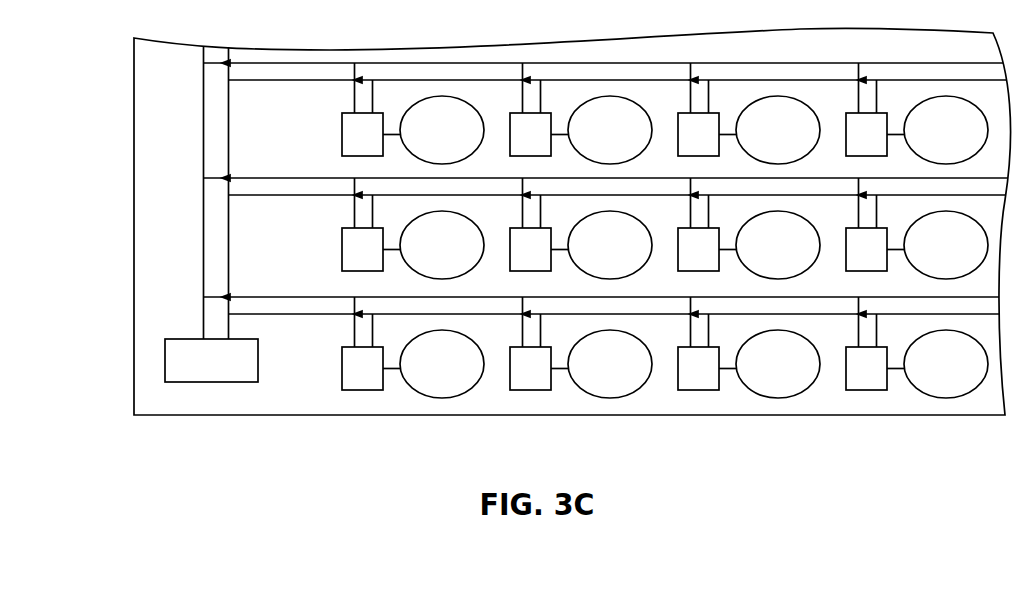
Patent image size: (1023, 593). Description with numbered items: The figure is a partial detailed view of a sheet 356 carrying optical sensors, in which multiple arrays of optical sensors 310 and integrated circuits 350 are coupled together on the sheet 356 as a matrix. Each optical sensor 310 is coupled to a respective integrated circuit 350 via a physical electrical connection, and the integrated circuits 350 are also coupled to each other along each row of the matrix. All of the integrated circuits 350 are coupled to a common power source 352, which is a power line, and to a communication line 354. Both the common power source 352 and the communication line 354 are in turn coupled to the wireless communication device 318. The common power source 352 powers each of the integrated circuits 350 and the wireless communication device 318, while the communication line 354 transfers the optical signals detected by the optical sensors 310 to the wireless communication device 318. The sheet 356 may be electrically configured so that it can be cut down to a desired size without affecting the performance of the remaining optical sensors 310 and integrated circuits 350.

The optical sensor 310 is at (423, 141).
The wireless communication device 318 is at (165, 367).
The integrated circuit 350 is at (345, 145).
The common power source 352 is at (203, 318).
The communication line 354 is at (228, 252).
The sheet 356 is at (193, 415).